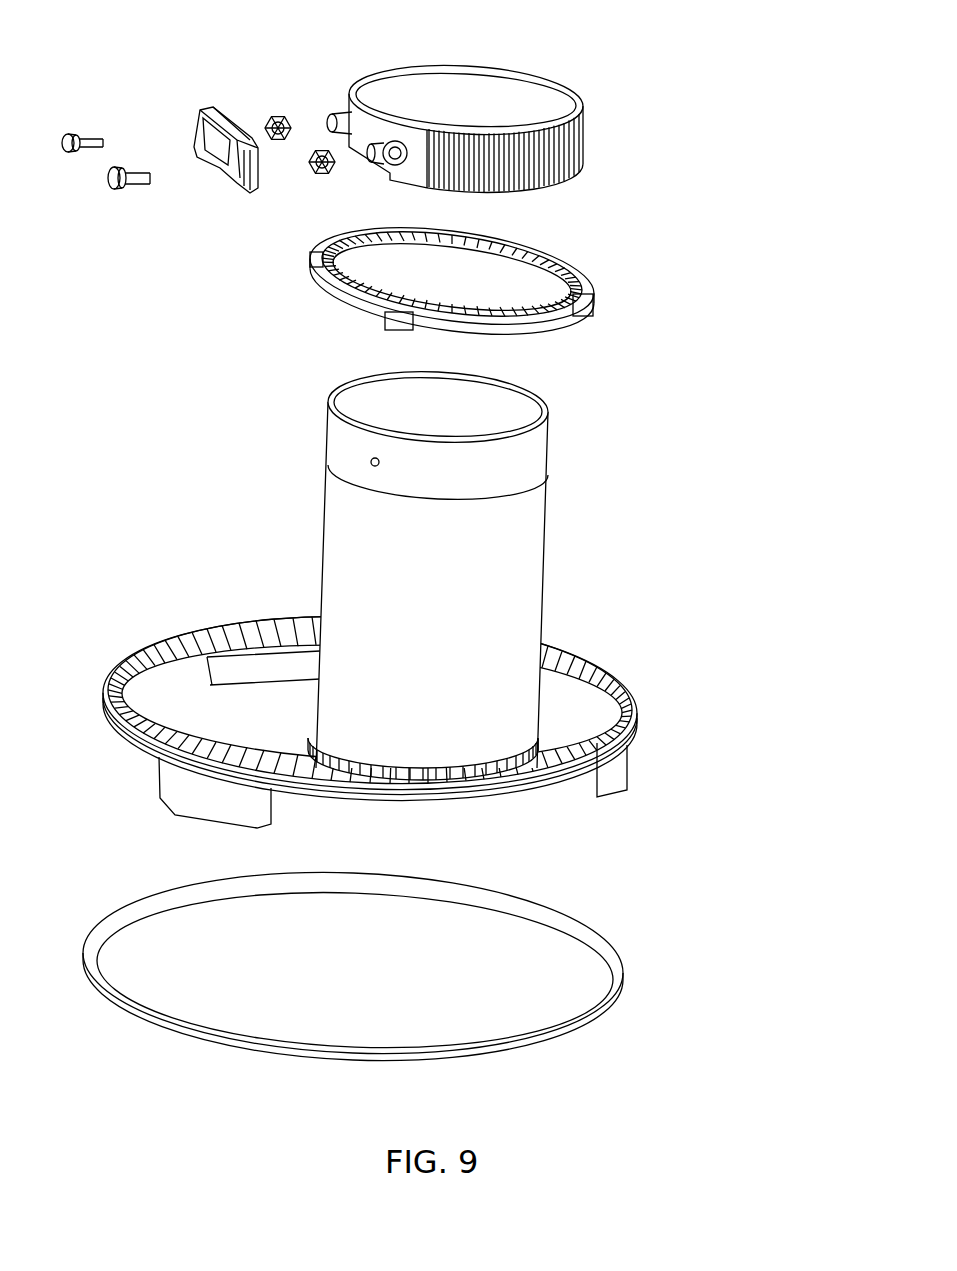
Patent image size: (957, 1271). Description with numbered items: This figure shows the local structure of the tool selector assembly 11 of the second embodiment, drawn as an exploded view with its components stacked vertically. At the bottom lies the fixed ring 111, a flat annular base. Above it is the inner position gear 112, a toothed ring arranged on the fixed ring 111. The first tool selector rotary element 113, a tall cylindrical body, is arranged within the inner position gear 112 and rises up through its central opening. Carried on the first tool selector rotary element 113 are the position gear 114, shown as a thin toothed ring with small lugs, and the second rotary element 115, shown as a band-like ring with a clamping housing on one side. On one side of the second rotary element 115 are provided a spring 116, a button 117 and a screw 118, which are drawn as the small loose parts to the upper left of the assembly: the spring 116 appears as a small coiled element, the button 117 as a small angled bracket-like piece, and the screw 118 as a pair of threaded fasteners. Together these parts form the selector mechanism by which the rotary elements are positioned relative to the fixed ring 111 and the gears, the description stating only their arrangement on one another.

The tool selector assembly 11 is at (672, 407).
The fixed ring 111 is at (623, 972).
The inner position gear 112 is at (636, 705).
The first tool selector rotary element 113 is at (485, 628).
The position gear 114 is at (592, 290).
The second rotary element 115 is at (583, 143).
The spring 116 is at (317, 170).
The button 117 is at (233, 190).
The screw 118 is at (118, 190).